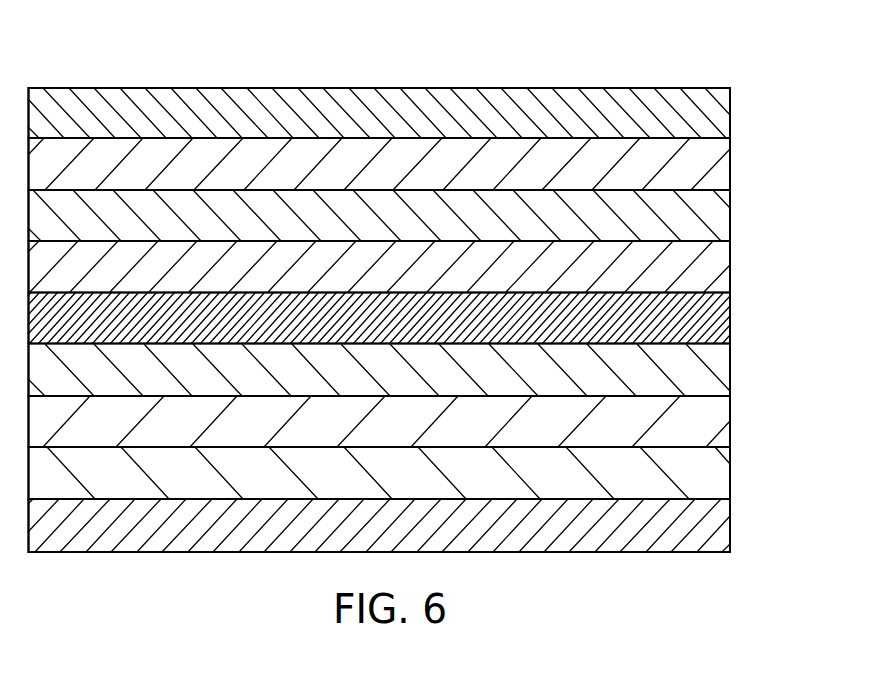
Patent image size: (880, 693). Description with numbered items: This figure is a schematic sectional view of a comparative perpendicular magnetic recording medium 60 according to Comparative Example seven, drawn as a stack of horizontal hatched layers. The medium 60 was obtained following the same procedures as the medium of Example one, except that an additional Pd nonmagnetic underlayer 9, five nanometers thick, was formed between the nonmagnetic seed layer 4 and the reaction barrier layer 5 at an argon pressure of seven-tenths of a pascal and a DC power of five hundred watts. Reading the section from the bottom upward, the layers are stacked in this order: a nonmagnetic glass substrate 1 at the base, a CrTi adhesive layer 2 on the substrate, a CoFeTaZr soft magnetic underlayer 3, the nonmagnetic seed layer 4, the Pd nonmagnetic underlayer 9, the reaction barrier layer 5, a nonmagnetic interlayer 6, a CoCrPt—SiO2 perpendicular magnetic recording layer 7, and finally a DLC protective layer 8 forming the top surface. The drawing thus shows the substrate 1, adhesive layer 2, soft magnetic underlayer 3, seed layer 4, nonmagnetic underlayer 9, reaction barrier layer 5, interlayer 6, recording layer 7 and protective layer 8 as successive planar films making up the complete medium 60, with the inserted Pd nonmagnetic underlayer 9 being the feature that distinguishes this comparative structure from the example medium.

The perpendicular magnetic recording medium 60 is at (697, 85).
The nonmagnetic glass substrate 1 is at (723, 523).
The CrTi adhesive layer 2 is at (723, 473).
The CoFeTaZr soft magnetic underlayer 3 is at (723, 421).
The nonmagnetic seed layer 4 is at (723, 369).
The reaction barrier layer 5 is at (723, 268).
The nonmagnetic interlayer 6 is at (723, 218).
The CoCrPt—SiO2 perpendicular magnetic recording layer 7 is at (723, 168).
The DLC protective layer 8 is at (723, 118).
The Pd nonmagnetic underlayer 9 is at (723, 318).